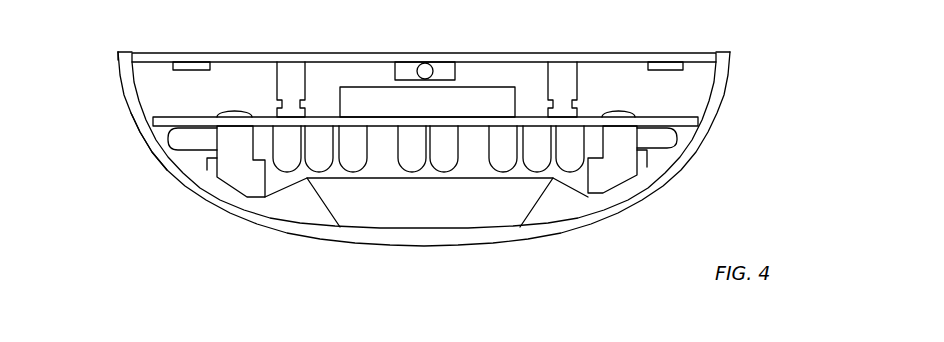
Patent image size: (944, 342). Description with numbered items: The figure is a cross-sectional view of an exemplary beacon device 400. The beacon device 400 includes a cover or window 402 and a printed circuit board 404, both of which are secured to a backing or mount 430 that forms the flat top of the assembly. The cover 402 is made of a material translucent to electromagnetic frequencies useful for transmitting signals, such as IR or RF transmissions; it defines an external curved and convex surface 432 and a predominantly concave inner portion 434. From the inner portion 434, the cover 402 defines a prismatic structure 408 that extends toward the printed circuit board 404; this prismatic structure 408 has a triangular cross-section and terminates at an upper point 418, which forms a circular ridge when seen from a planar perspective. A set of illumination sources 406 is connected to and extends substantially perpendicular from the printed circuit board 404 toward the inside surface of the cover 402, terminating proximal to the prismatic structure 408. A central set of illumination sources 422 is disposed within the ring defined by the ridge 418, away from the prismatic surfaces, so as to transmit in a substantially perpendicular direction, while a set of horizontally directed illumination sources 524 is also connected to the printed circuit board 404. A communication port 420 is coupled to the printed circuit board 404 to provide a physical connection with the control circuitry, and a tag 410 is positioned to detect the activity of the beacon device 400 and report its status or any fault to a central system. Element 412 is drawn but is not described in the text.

The beacon device 400 is at (606, 29).
The cover 402 is at (731, 87).
The printed circuit board 404 is at (575, 218).
The illumination sources 406 is at (287, 163).
The prismatic structure 408 is at (542, 195).
The tag 410 is at (480, 88).
The support block 412 is at (613, 155).
The upper point 418 is at (307, 180).
The communication port 420 is at (405, 63).
The illumination sources 422 is at (413, 160).
The mount 430 is at (240, 52).
The external curved and convex surface 432 is at (147, 142).
The inner portion 434 is at (137, 94).
The horizontally directed illumination sources 524 is at (188, 140).